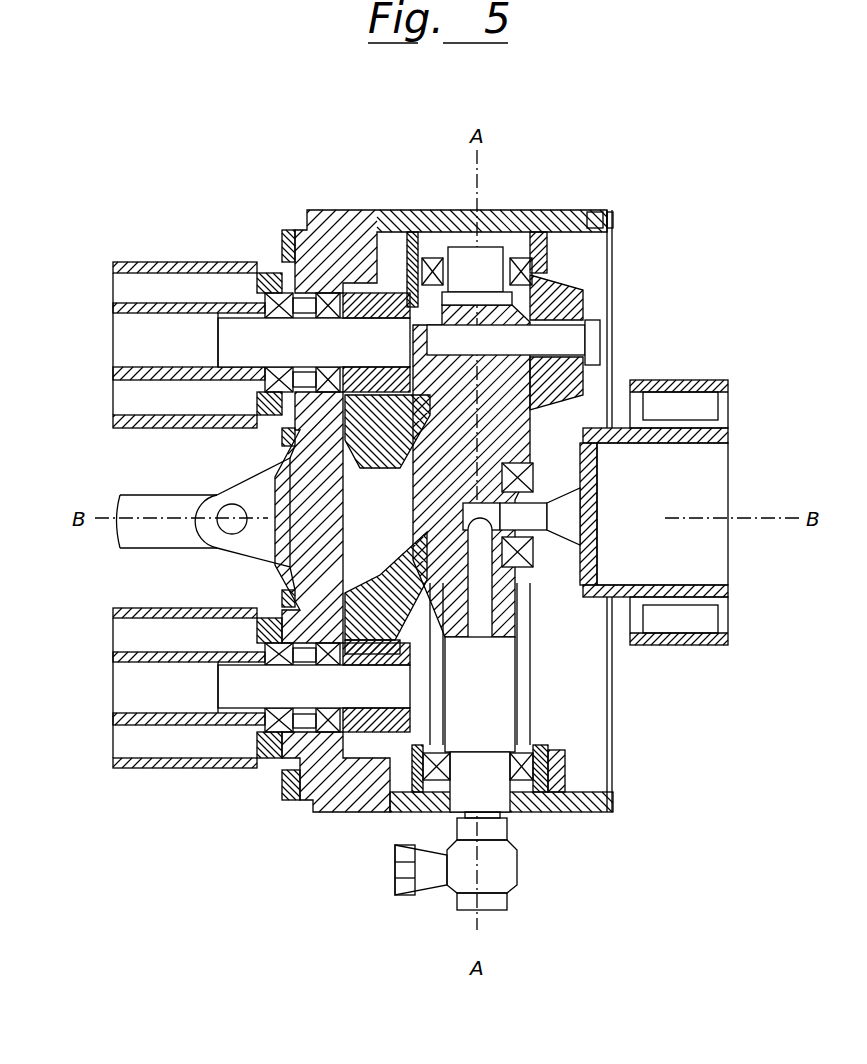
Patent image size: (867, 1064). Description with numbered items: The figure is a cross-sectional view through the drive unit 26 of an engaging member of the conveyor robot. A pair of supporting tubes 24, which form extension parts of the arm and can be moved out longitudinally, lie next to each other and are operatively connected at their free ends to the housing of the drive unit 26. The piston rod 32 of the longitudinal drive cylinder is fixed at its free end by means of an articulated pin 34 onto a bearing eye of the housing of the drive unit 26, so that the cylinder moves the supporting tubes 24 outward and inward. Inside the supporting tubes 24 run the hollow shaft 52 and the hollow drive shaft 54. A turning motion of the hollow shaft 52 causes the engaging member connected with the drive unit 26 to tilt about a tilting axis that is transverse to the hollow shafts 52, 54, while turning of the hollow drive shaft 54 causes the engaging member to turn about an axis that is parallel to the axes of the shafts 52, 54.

The supporting tube 24 is at (162, 267).
The drive unit 26 is at (512, 212).
The piston rod 32 is at (182, 503).
The articulated pin 34 is at (228, 530).
The hollow shaft 52 is at (190, 308).
The hollow drive shaft 54 is at (200, 722).